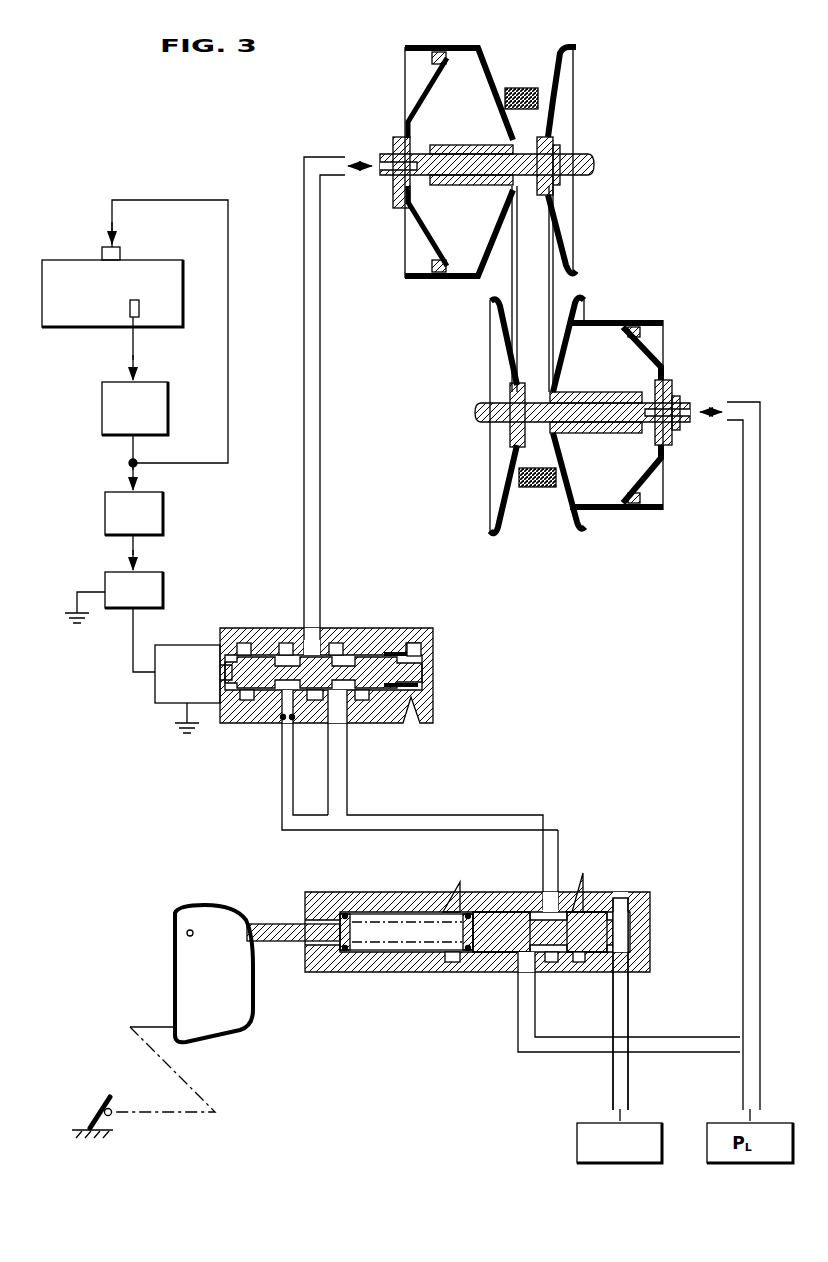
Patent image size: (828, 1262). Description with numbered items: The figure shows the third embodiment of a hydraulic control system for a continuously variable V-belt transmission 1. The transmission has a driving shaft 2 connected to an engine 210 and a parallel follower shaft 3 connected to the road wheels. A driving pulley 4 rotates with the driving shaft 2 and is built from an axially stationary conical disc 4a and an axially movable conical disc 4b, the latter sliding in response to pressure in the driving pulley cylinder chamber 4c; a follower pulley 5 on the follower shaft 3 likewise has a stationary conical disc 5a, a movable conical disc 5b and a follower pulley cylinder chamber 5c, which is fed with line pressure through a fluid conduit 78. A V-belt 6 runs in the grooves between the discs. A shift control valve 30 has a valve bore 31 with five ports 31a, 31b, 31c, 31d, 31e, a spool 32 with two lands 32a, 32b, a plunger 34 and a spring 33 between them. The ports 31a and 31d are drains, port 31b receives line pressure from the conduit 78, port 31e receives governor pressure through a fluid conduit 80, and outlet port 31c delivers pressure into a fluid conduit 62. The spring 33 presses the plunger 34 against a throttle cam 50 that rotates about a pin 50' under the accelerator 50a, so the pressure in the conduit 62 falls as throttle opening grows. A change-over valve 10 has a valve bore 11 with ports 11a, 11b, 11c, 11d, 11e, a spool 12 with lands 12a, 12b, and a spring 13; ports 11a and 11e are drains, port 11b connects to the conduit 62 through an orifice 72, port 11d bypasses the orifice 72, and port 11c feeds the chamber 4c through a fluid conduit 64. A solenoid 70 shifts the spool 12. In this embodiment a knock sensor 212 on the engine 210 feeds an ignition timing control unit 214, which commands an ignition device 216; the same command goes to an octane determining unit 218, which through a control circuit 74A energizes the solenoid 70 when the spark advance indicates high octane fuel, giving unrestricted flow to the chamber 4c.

The continuously variable V-belt transmission 1 is at (526, 275).
The driving shaft 2 is at (591, 156).
The follower shaft 3 is at (484, 420).
The driving pulley 4 is at (483, 175).
The axially stationary conical disc 4a is at (565, 238).
The axially movable conical disc 4b is at (489, 60).
The driving pulley cylinder chamber 4c is at (398, 130).
The follower pulley 5 is at (577, 396).
The axially stationary conical disc 5a is at (500, 348).
The axially movable conical disc 5b is at (570, 502).
The follower pulley cylinder chamber 5c is at (642, 458).
The V-belt 6 is at (560, 290).
The change-over valve 10 is at (335, 643).
The valve bore 11 is at (317, 678).
The drain port 11a is at (244, 643).
The port 11b is at (286, 643).
The port 11c is at (312, 622).
The port 11d is at (343, 635).
The drain port 11e is at (414, 652).
The spool 12 is at (318, 702).
The land 12a is at (262, 702).
The land 12b is at (360, 702).
The spring 13 is at (422, 660).
The shift control valve 30 is at (522, 958).
The valve bore 31 is at (395, 912).
The drain port 31a is at (452, 963).
The port 31b is at (524, 962).
The outlet port 31c is at (551, 963).
The drain port 31d is at (579, 963).
The port 31e is at (630, 944).
The spool 32 is at (558, 902).
The land 32a is at (500, 912).
The land 32b is at (595, 915).
The spring 33 is at (380, 912).
The plunger 34 is at (350, 958).
The throttle cam 50 is at (226, 1008).
The pin 50' is at (156, 935).
The accelerator 50a is at (105, 1100).
The fluid conduit 62 is at (450, 812).
The fluid conduit 64 is at (322, 481).
The solenoid 70 is at (186, 642).
The orifice 72 is at (281, 772).
The control circuit 74A is at (105, 582).
The fluid conduit 78 is at (742, 675).
The fluid conduit 80 is at (629, 1080).
The engine 210 is at (42, 318).
The knock sensor 212 is at (140, 310).
The ignition timing control unit 214 is at (102, 416).
The ignition device 216 is at (121, 252).
The octane determining unit 218 is at (105, 511).